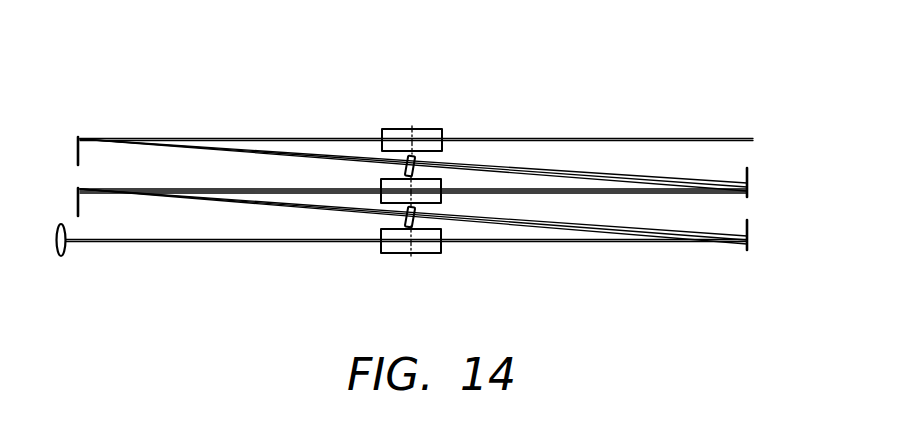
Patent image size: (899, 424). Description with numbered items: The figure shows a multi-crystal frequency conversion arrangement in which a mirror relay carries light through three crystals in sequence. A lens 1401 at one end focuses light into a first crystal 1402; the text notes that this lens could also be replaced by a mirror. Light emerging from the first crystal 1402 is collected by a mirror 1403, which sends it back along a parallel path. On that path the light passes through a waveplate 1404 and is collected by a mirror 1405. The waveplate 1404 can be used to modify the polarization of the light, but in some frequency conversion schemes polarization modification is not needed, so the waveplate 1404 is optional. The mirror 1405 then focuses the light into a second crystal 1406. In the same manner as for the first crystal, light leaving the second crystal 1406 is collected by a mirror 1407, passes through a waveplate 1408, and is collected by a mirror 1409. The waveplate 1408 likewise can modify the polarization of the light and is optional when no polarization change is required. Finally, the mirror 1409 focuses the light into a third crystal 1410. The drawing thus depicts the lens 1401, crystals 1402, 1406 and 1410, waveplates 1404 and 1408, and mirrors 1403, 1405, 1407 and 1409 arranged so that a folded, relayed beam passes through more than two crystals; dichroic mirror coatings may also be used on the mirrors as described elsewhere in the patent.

The lens 1401 is at (61, 256).
The first crystal 1402 is at (412, 254).
The mirror 1403 is at (748, 242).
The waveplate 1404 is at (418, 216).
The mirror 1405 is at (73, 200).
The second crystal 1406 is at (380, 178).
The mirror 1407 is at (750, 182).
The waveplate 1408 is at (418, 158).
The mirror 1409 is at (78, 152).
The third crystal 1410 is at (412, 129).